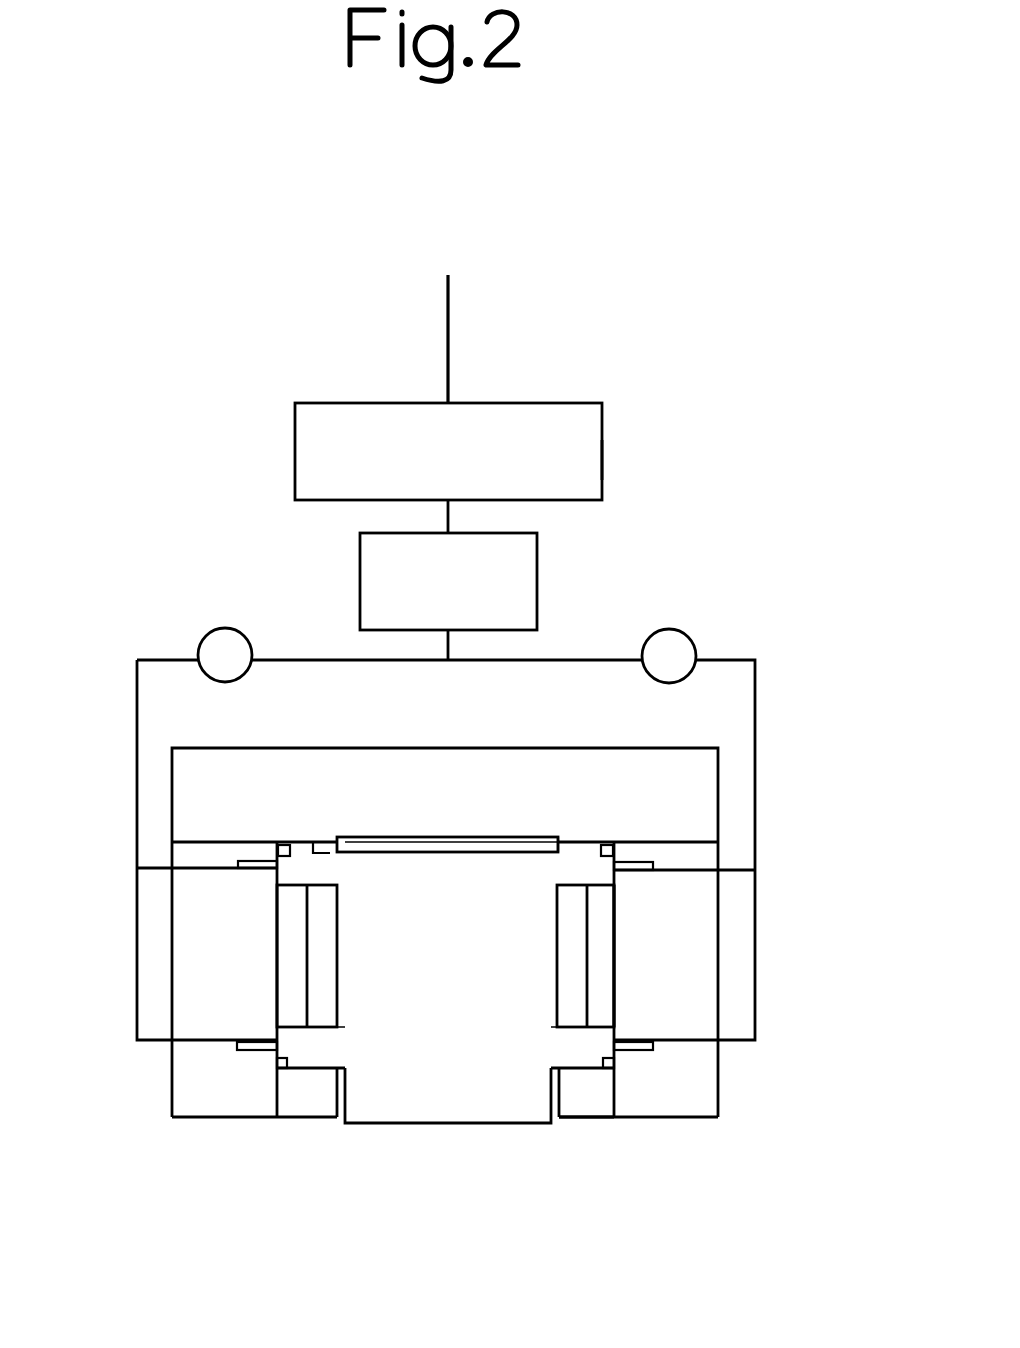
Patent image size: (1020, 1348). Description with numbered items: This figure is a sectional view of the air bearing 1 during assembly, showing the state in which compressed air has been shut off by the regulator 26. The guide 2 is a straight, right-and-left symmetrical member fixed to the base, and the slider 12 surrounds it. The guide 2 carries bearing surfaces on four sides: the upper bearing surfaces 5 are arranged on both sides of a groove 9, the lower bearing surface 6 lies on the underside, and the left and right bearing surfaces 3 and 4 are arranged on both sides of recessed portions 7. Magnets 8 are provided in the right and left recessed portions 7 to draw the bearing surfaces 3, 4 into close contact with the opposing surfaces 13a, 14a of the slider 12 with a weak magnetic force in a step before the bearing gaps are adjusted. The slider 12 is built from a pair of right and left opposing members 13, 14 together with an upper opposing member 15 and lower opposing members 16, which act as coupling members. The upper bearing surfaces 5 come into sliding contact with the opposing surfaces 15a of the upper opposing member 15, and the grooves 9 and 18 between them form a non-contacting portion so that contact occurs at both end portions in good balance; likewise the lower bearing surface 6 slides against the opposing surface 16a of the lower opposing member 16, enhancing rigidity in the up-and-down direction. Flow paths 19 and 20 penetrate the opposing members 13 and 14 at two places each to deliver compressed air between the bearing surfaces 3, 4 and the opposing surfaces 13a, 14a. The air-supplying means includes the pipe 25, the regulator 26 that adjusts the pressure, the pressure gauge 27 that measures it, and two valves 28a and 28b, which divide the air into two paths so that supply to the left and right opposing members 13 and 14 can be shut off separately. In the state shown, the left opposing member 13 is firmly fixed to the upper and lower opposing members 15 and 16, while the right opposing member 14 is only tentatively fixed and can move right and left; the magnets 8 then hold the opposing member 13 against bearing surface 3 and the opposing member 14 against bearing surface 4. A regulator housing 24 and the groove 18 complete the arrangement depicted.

The pressurizing apparatus 1 is at (364, 322).
The guide 2 is at (450, 1128).
The left bearing surface 3 is at (277, 1035).
The right bearing surface 4 is at (614, 1032).
The upper bearing surface 5 is at (575, 840).
The lower bearing surface 6 is at (595, 1102).
The recessed portion 7 is at (290, 907).
The magnet 8 is at (570, 980).
The groove 9 is at (500, 850).
The slider 12 is at (211, 1121).
The left opposing member 13 is at (190, 1077).
The left opposing surface 13a is at (291, 846).
The right opposing member 14 is at (704, 1092).
The right opposing surface 14a is at (614, 1040).
The upper opposing member 15 is at (685, 768).
The upper opposing surface 15a is at (315, 848).
The lower opposing member 16 is at (597, 1113).
The lower opposing surface 16a is at (323, 1072).
The groove 18 is at (432, 837).
The flow path 19 is at (262, 862).
The flow path 20 is at (630, 862).
The regulator 24 is at (607, 425).
The pipe 25 is at (448, 323).
The regulator 26 is at (603, 464).
The pressure gauge 27 is at (538, 580).
The valve 28a is at (220, 628).
The valve 28b is at (690, 629).